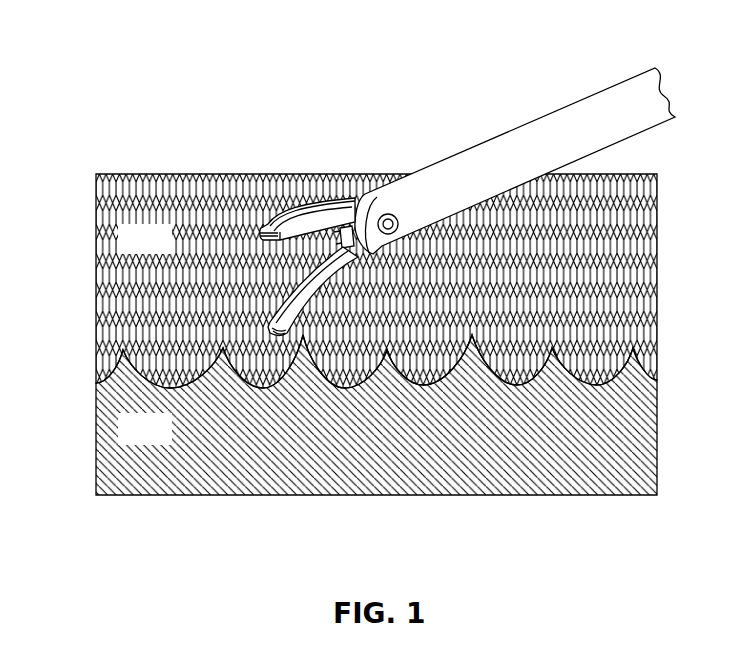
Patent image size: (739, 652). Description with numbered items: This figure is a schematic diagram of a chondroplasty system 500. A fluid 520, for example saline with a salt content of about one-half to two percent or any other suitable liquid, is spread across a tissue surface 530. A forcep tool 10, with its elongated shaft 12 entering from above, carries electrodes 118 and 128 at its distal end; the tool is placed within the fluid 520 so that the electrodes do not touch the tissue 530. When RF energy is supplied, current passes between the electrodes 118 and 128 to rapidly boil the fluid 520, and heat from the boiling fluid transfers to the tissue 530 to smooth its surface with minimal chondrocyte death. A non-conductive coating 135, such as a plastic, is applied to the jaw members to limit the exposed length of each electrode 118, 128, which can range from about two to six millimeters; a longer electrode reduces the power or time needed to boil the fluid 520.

The chondroplasty system 500 is at (340, 268).
The fluid 520 is at (165, 250).
The tissue surface 530 is at (165, 441).
The forcep tool 10 is at (360, 195).
The shaft 12 is at (625, 130).
The non-conductive coating 135 is at (313, 205).
The electrode 128 is at (266, 211).
The electrode 118 is at (270, 331).